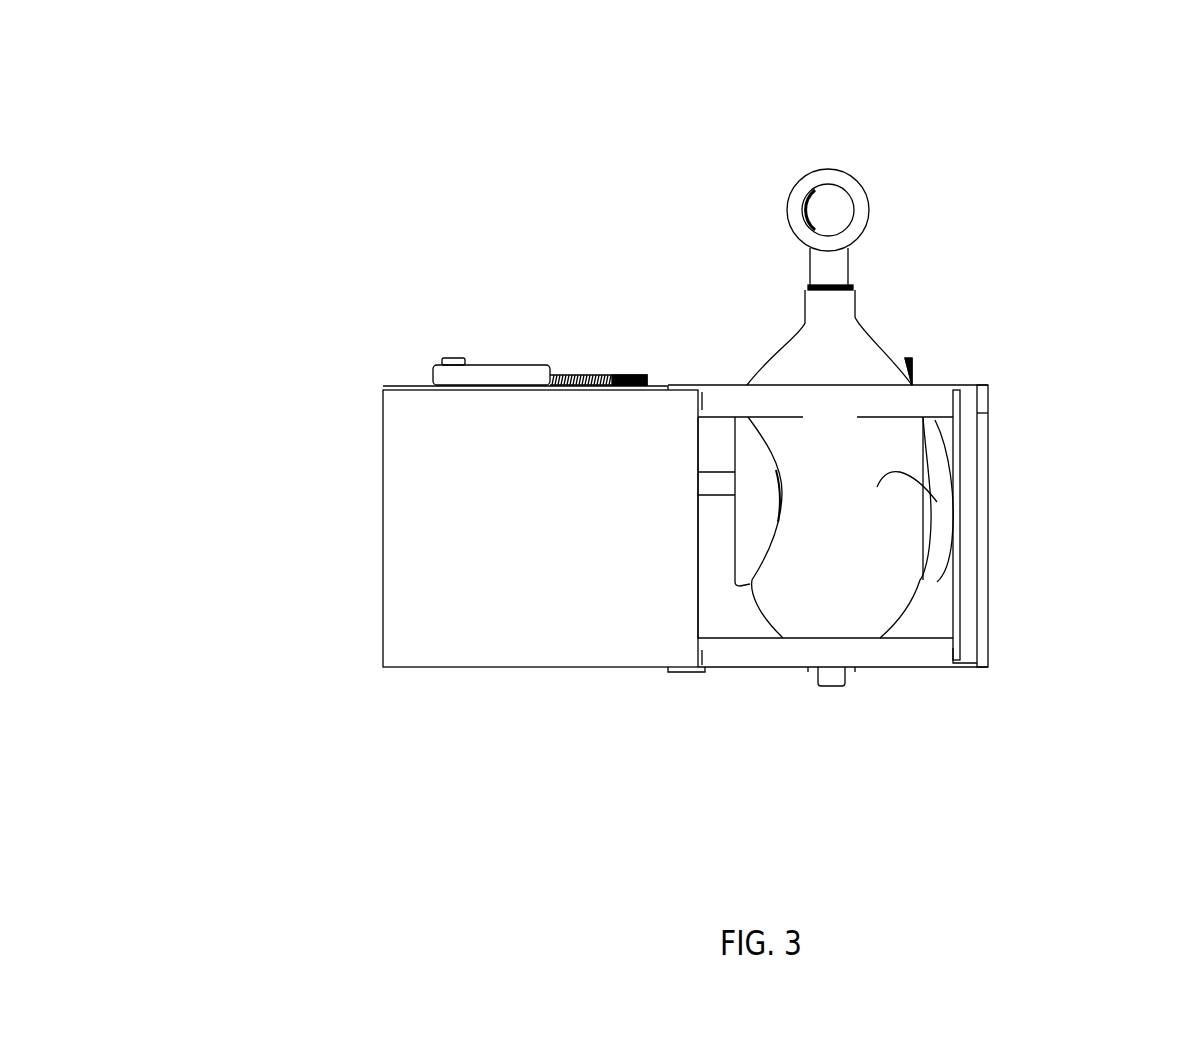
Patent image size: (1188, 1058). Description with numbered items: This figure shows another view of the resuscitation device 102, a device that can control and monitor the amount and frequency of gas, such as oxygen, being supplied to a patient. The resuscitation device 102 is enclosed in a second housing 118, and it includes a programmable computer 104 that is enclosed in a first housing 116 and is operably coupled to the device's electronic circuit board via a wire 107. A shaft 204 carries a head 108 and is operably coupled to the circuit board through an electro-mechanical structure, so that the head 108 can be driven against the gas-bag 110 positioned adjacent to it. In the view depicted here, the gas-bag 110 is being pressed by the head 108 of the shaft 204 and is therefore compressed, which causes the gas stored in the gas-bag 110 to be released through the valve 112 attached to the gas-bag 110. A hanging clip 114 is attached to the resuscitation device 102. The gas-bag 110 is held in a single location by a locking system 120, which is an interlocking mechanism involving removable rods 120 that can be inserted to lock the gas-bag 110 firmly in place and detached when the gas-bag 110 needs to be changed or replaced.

The resuscitation device 102 is at (252, 120).
The programmable computer 104 is at (453, 357).
The wire 107 is at (623, 375).
The head 108 is at (755, 503).
The gas-bag 110 is at (837, 357).
The valve 112 is at (828, 192).
The hanging clip 114 is at (910, 356).
The first housing 116 is at (510, 380).
The second housing 118 is at (448, 488).
The locking system 120 is at (917, 407).
The shaft 204 is at (713, 487).